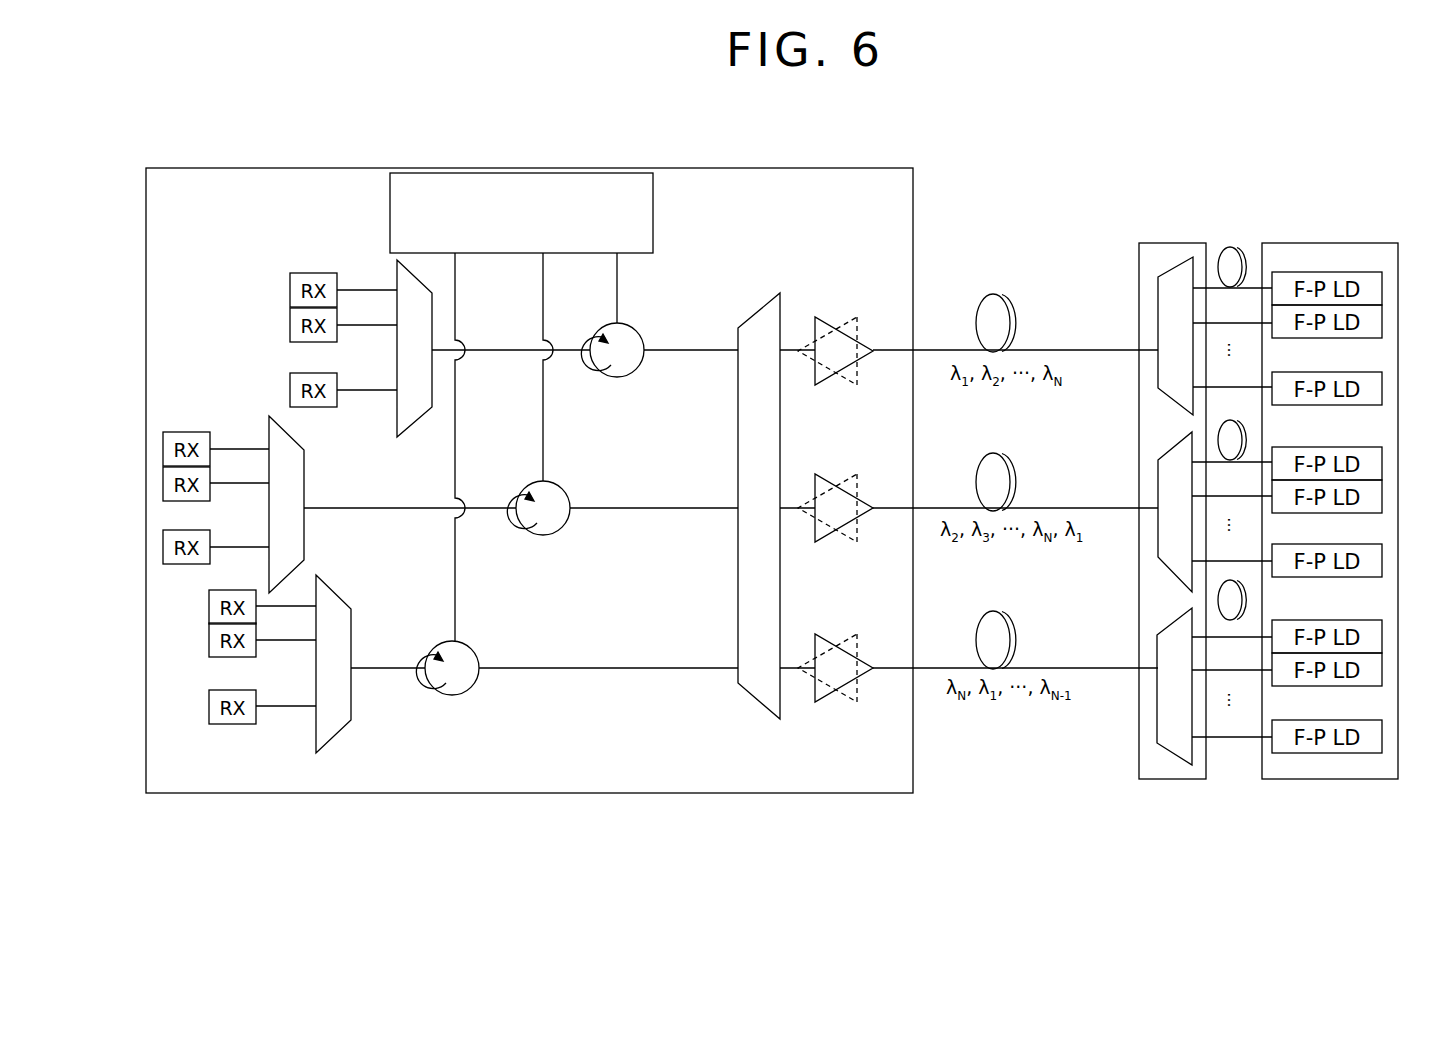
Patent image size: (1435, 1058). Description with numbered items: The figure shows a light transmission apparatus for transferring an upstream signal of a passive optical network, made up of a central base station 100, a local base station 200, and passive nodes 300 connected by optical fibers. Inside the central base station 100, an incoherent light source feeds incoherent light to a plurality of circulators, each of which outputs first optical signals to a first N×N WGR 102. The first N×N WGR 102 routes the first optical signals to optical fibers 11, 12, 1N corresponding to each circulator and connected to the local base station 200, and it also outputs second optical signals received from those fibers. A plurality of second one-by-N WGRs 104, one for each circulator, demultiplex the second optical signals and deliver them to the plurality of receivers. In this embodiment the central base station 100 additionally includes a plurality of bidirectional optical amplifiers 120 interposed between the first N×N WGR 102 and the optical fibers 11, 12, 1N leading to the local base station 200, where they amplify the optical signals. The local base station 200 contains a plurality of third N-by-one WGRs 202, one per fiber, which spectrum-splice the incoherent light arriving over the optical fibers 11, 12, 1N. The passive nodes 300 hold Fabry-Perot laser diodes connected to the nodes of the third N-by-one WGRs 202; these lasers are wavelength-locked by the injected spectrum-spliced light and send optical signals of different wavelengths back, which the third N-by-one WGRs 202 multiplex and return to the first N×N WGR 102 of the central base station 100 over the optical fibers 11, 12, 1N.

The central base station 100 is at (913, 193).
The first N×N WGR 102 is at (760, 305).
The second 1×N WGR 104 is at (337, 730).
The bidirectional optical amplifier 120 is at (825, 318).
The optical fiber 11 is at (1013, 300).
The optical fiber 12 is at (1013, 457).
The optical fiber 1N is at (1013, 615).
The local base station 200 is at (1200, 243).
The third N×1 WGR 202 is at (1172, 277).
The passive node 300 is at (1392, 243).